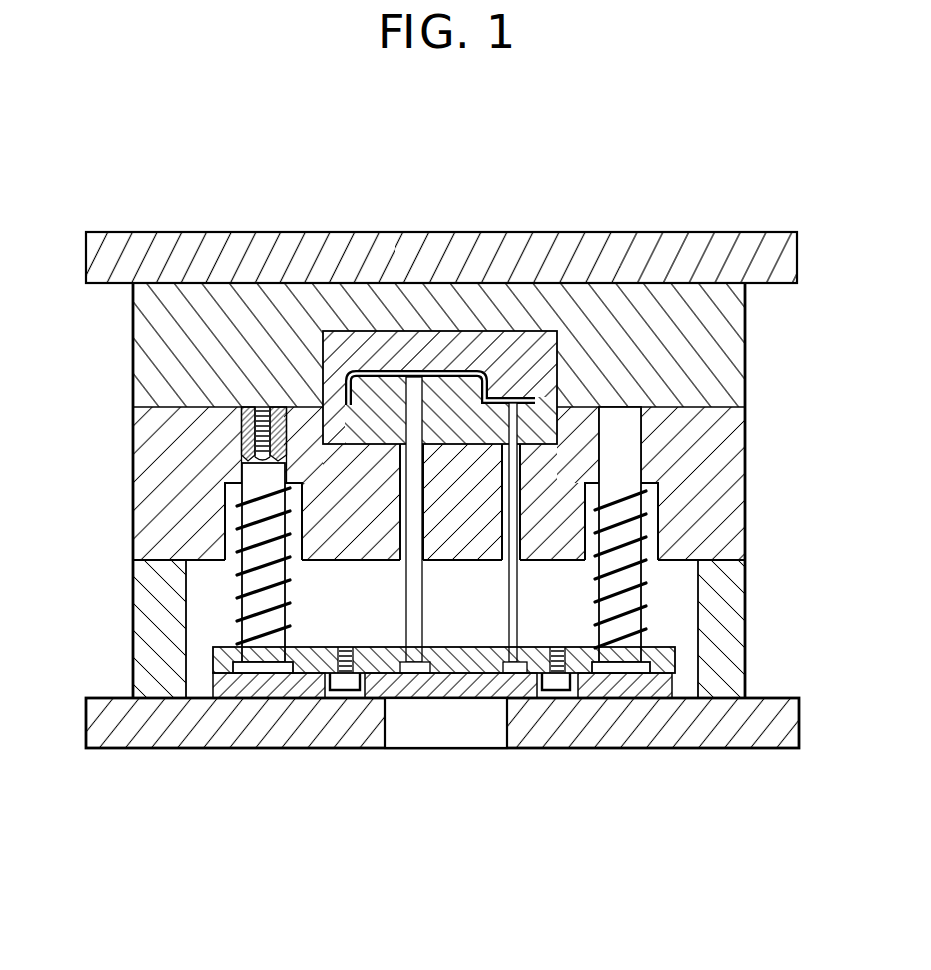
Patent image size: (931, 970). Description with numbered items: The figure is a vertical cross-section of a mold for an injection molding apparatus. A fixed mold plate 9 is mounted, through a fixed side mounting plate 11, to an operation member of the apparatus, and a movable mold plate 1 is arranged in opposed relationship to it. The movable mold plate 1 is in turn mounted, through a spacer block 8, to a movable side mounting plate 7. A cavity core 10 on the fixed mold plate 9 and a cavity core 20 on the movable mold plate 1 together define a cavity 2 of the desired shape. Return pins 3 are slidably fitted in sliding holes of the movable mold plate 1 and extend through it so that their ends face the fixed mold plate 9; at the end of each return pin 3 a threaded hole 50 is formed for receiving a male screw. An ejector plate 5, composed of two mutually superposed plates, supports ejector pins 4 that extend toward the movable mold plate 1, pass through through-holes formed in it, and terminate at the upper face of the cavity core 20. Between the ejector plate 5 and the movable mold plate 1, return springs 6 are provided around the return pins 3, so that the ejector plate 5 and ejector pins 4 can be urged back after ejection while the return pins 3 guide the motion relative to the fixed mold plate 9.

The movable mold plate 1 is at (731, 484).
The cavity 2 is at (368, 372).
The return pin 3 is at (253, 515).
The ejector pin 4 is at (414, 590).
The ejector plate 5 is at (680, 660).
The return spring 6 is at (273, 592).
The movable side mounting plate 7 is at (166, 730).
The spacer block 8 is at (735, 580).
The fixed mold plate 9 is at (731, 350).
The cavity core 10 is at (522, 340).
The fixed side mounting plate 11 is at (222, 242).
The cavity core 20 is at (333, 468).
The threaded hole 50 is at (256, 407).